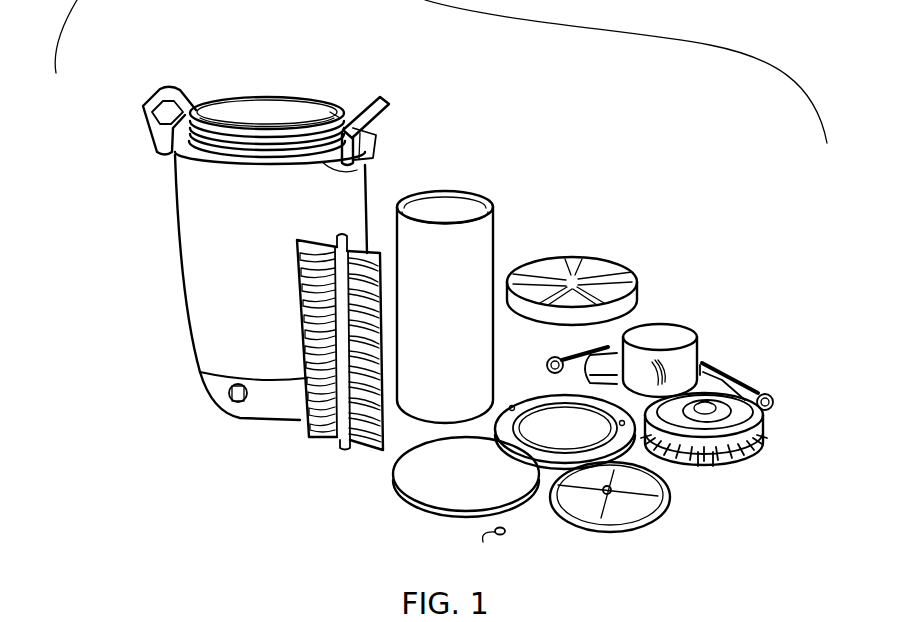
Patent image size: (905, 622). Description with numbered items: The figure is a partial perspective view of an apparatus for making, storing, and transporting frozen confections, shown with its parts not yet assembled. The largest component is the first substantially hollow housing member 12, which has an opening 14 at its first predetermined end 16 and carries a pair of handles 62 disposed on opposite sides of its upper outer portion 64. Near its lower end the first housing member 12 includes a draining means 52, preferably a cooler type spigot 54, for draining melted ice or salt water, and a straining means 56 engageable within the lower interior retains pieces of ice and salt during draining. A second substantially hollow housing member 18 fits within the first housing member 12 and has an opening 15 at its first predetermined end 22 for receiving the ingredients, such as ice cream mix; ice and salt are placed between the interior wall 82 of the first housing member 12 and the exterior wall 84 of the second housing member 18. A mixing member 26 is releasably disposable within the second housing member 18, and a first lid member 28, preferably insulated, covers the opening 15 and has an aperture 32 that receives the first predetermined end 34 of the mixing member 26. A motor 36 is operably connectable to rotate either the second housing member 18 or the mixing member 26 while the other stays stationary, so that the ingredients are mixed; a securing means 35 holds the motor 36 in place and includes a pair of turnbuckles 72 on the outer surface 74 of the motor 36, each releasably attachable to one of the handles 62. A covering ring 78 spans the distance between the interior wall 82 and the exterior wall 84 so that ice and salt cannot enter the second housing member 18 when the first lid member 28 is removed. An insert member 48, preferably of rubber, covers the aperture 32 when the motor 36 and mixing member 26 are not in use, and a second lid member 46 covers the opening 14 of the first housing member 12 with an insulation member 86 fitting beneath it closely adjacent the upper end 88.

The first substantially hollow housing member 12 is at (200, 195).
The opening 14 is at (270, 113).
The opening 15 is at (460, 203).
The first predetermined end 16 is at (345, 112).
The second substantially hollow housing member 18 is at (472, 237).
The first predetermined end 22 is at (398, 206).
The mixing member 26 is at (347, 400).
The first lid member 28 is at (623, 513).
The aperture 32 is at (575, 511).
The first predetermined end 34 is at (337, 231).
The securing means 35 is at (548, 358).
The motor 36 is at (670, 325).
The second lid member 46 is at (578, 258).
The insert member 48 is at (489, 548).
The draining means 52 is at (240, 415).
The cooler type spigot 54 is at (233, 400).
The straining means 56 is at (772, 412).
The handles 62 is at (152, 103).
The upper outer portion 64 is at (381, 208).
The turnbuckles 72 is at (553, 370).
The outer surface 74 is at (615, 355).
The covering ring 78 is at (633, 440).
The interior wall 82 is at (284, 107).
The exterior wall 84 is at (468, 270).
The insulation member 86 is at (417, 470).
The upper end 88 is at (337, 112).